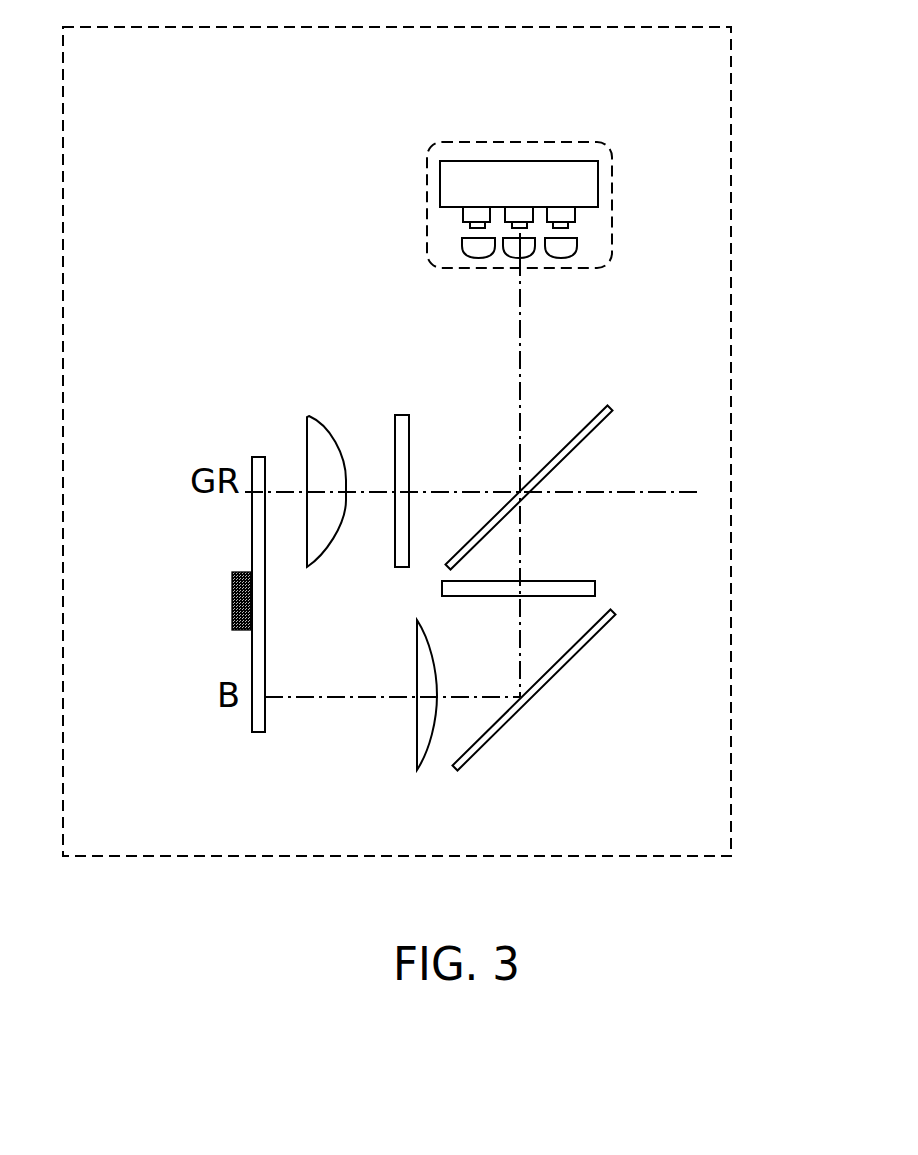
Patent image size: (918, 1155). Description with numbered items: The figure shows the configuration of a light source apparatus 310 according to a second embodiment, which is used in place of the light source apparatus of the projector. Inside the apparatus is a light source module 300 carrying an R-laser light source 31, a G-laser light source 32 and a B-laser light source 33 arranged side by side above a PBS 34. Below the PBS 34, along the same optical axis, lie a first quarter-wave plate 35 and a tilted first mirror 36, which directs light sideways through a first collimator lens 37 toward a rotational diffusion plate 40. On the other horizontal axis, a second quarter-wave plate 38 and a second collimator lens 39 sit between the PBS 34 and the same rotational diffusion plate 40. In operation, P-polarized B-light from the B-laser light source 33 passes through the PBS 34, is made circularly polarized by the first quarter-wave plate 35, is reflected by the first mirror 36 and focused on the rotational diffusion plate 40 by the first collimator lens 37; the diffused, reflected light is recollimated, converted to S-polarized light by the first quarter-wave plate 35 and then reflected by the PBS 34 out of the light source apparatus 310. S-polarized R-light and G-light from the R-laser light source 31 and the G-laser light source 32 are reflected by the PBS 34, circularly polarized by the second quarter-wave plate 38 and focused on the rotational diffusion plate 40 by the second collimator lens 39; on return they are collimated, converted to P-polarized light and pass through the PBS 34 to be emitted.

The light source module 300 is at (565, 140).
The R-laser light source 31 is at (472, 212).
The G-laser light source 32 is at (563, 215).
The B-laser light source 33 is at (523, 212).
The PBS 34 is at (593, 420).
The first λ/4 plate 35 is at (565, 590).
The first mirror 36 is at (465, 760).
The first collimator lens 37 is at (420, 750).
The second λ/4 plate 38 is at (402, 442).
The second collimator lens 39 is at (312, 432).
The rotational diffusion plate 40 is at (258, 722).
The light source apparatus 310 is at (730, 180).